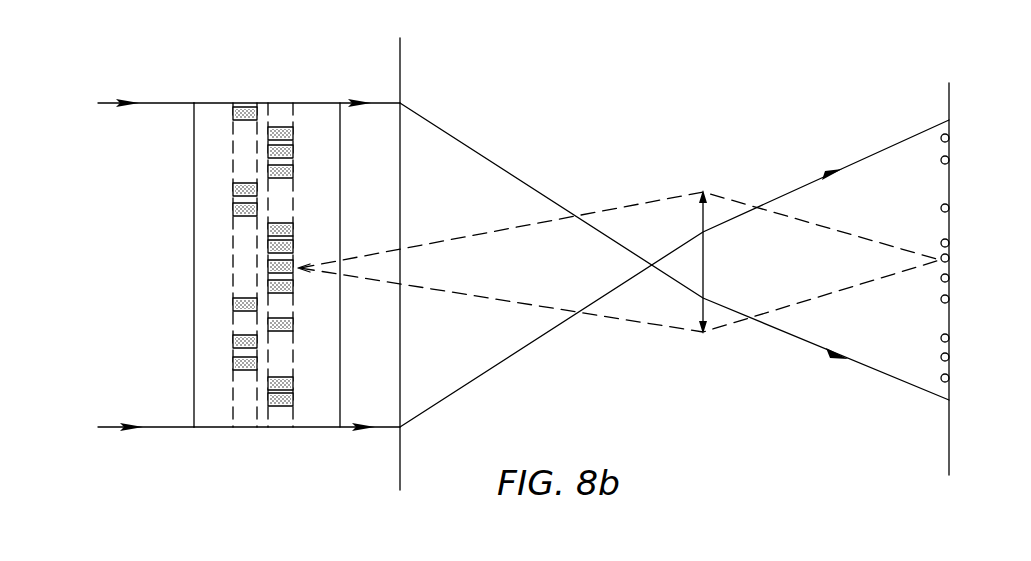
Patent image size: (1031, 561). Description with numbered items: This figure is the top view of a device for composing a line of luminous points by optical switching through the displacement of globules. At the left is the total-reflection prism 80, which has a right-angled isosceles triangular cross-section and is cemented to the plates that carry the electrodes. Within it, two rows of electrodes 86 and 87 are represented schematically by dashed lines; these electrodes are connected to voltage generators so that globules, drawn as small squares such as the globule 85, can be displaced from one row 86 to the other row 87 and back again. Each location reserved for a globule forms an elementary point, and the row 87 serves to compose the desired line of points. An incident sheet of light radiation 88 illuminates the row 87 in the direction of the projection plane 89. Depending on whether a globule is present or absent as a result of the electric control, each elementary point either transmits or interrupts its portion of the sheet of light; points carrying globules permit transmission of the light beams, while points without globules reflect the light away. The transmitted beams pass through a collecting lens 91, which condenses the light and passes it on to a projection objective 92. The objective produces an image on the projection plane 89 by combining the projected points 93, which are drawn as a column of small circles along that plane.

The total-reflection prism 80 is at (313, 107).
The globule 85 is at (242, 103).
The row of electrodes 86 is at (243, 413).
The row of electrodes 87 is at (285, 415).
The incident sheet of light radiation 88 is at (148, 110).
The projection plane 89 is at (951, 98).
The collecting lens 91 is at (402, 82).
The projection objective 92 is at (705, 207).
The projected points 93 is at (941, 262).